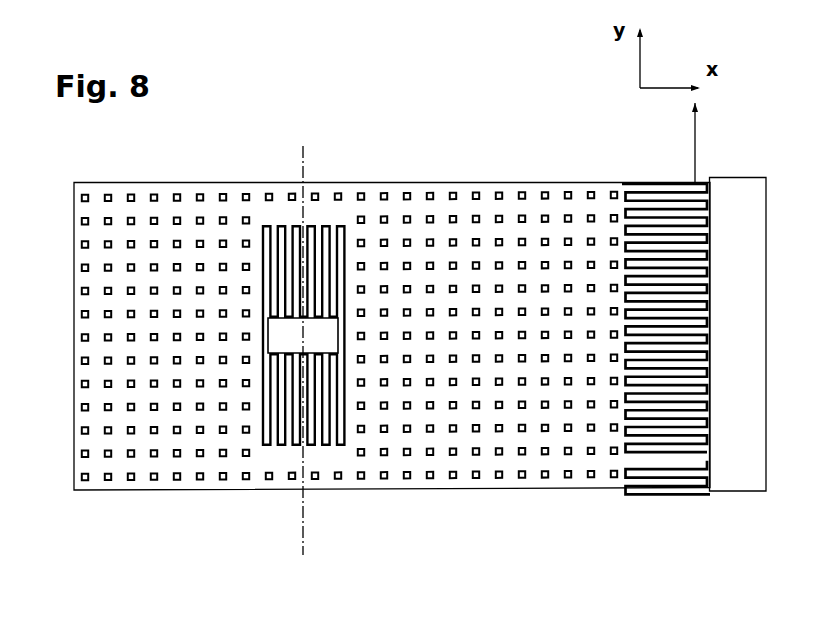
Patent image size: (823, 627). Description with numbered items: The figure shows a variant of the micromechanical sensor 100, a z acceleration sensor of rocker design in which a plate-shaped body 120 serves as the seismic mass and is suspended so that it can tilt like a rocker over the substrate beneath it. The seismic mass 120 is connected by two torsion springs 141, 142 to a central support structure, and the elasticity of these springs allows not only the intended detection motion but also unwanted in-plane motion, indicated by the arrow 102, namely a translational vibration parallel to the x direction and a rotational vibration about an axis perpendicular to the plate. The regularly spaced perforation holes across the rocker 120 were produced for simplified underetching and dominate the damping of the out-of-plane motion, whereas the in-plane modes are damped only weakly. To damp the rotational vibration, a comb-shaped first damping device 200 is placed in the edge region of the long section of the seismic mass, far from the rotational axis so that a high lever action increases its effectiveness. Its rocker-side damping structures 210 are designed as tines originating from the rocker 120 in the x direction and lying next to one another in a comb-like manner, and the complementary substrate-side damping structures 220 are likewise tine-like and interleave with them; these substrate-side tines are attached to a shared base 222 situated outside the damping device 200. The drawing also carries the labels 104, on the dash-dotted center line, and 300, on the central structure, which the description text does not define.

The micromechanical sensor 100 is at (712, 566).
The arrow 102 is at (698, 130).
The axis of symmetry 104 is at (308, 144).
The seismic mass 120 is at (74, 434).
The torsion spring 141 is at (298, 248).
The torsion spring 142 is at (303, 422).
The heater structure 300 is at (338, 341).
The first damping device 200 is at (654, 329).
The damping structures 210 is at (655, 463).
The complementary damping structures 220 is at (670, 472).
The shared base 222 is at (742, 473).